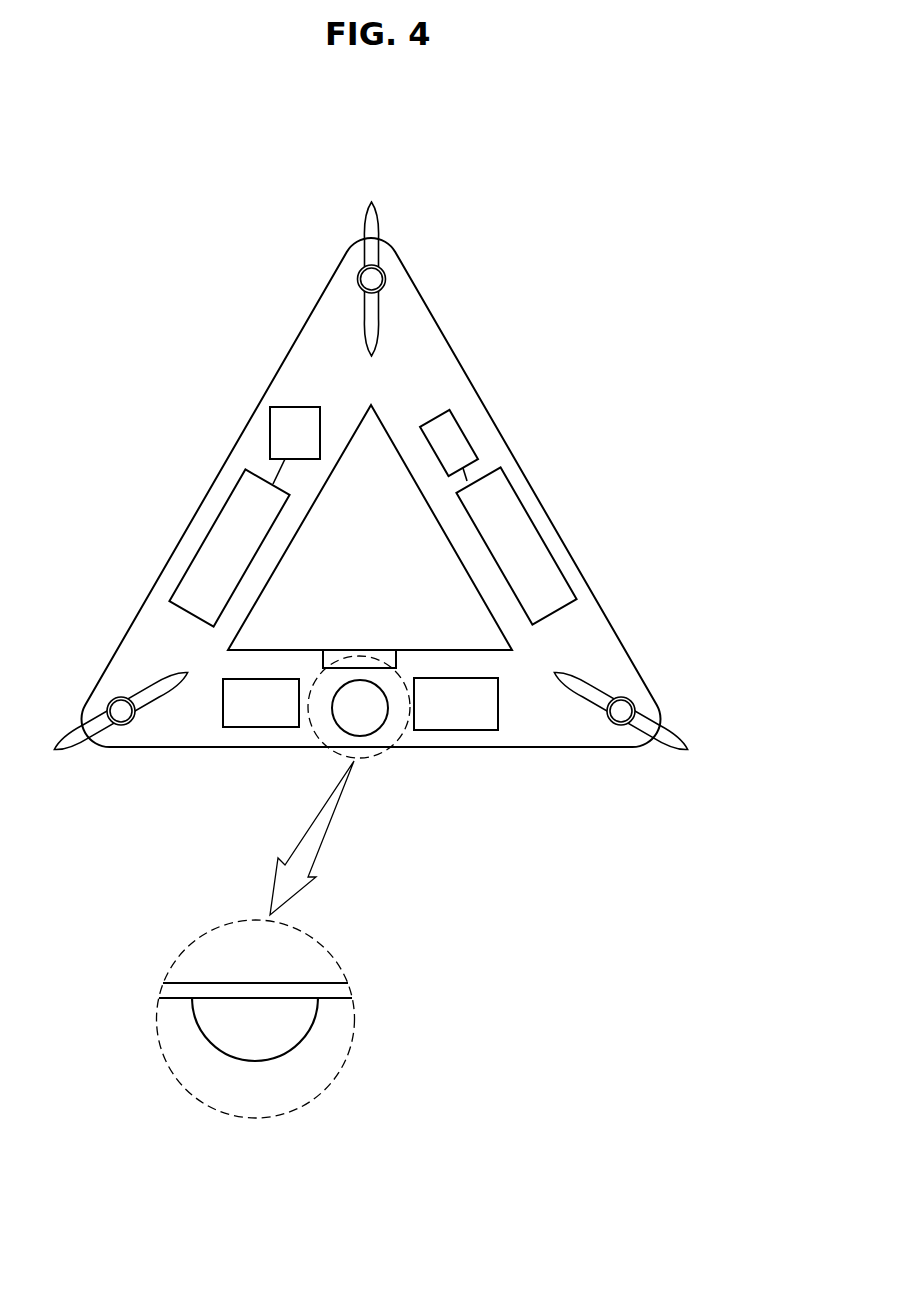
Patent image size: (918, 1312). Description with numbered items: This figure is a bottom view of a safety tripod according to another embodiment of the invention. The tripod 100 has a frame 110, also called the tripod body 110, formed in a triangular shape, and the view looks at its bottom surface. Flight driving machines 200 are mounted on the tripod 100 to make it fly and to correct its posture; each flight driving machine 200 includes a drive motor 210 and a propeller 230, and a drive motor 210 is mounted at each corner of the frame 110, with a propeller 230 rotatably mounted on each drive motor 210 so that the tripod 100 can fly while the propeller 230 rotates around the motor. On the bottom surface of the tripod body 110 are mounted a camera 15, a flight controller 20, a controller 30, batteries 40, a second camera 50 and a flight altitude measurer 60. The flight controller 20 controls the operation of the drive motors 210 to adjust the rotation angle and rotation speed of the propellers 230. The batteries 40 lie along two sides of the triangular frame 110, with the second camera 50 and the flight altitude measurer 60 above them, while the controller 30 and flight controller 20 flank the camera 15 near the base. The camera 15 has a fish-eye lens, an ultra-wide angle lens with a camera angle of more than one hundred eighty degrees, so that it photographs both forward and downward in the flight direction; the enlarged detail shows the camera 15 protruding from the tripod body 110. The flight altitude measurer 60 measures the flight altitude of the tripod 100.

The tripod 100 is at (472, 307).
The frame 110 is at (432, 378).
The flight driving machine 200 is at (371, 422).
The drive motor 210 is at (366, 279).
The propeller 230 is at (372, 262).
The second camera 50 is at (282, 428).
The flight altitude measurer 60 is at (452, 443).
The battery 40 is at (215, 547).
The controller 30 is at (257, 713).
The flight controller 20 is at (456, 715).
The camera 15 is at (370, 736).